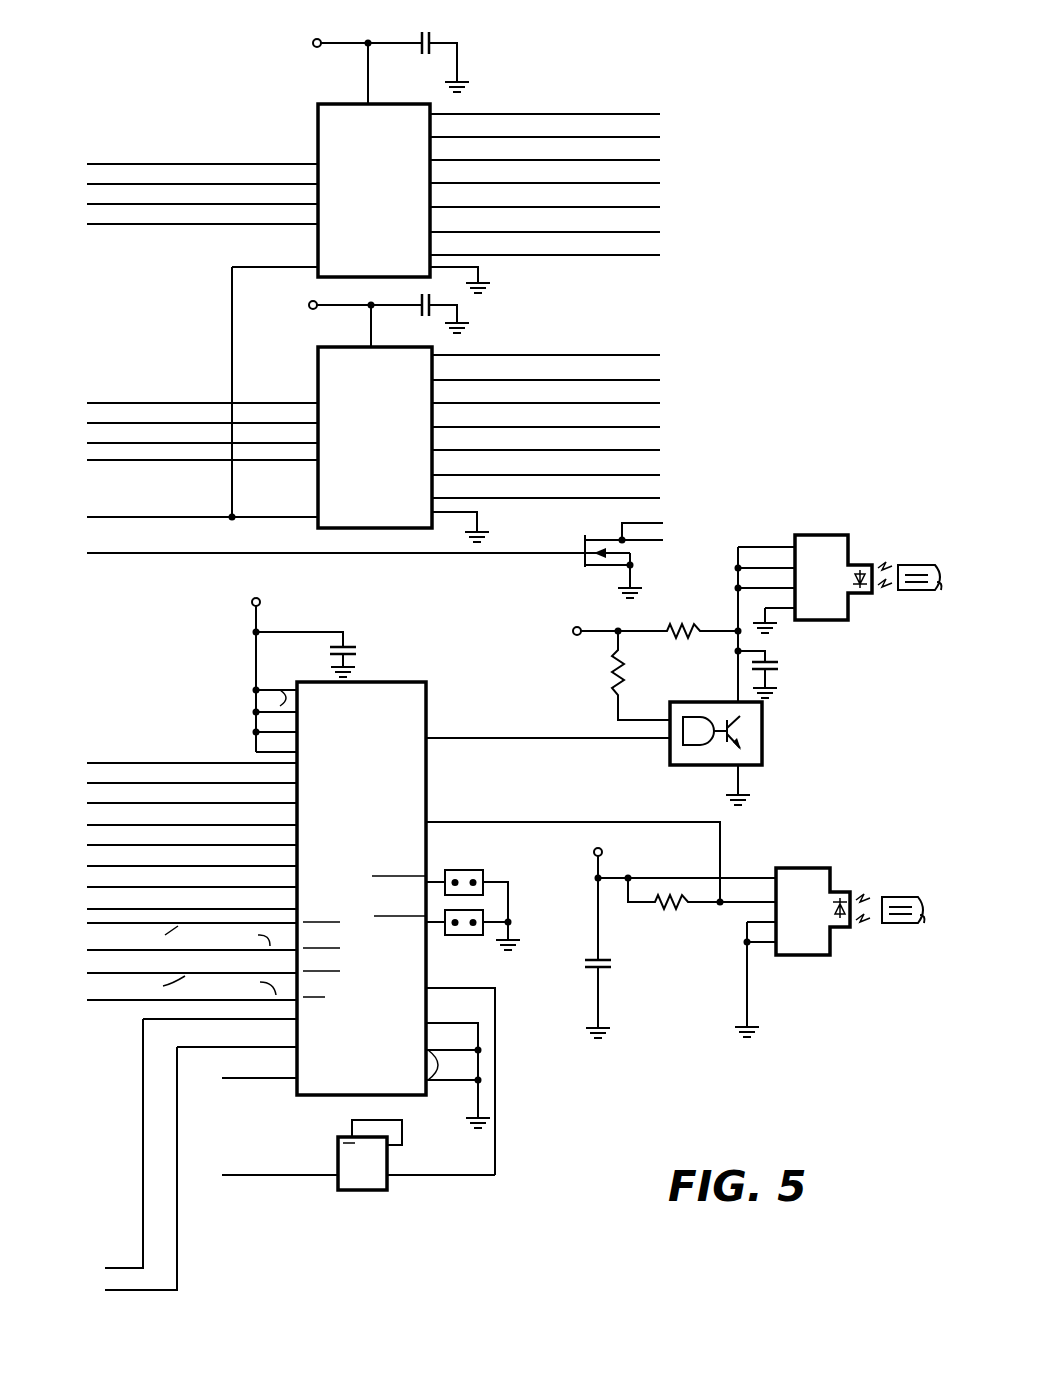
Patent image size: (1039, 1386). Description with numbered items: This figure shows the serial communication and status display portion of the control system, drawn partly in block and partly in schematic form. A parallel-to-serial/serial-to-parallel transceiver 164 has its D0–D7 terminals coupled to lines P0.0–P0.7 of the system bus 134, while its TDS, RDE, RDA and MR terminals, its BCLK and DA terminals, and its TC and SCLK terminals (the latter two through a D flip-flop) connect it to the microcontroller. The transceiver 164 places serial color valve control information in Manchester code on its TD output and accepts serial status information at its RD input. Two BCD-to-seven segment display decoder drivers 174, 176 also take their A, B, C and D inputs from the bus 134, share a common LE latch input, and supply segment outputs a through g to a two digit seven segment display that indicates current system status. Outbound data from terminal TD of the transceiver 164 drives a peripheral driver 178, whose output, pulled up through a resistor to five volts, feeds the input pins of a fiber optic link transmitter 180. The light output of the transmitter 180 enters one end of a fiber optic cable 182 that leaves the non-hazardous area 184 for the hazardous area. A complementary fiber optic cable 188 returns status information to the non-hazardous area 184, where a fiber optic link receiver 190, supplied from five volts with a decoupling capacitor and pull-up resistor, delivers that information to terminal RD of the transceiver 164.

The system bus 134 is at (100, 142).
The parallel-to-serial/serial-to-parallel transceiver 164 is at (445, 682).
The BCD-to-seven segment display decoder driver 174 is at (288, 124).
The BCD-to-seven segment display decoder driver 176 is at (285, 372).
The peripheral driver 178 is at (655, 757).
The fiber optic link transmitter 180 is at (818, 526).
The fiber optic cable 182 is at (909, 546).
The non-hazardous area 184 is at (882, 766).
The fiber optic cable 188 is at (889, 884).
The fiber optic link receiver 190 is at (800, 858).